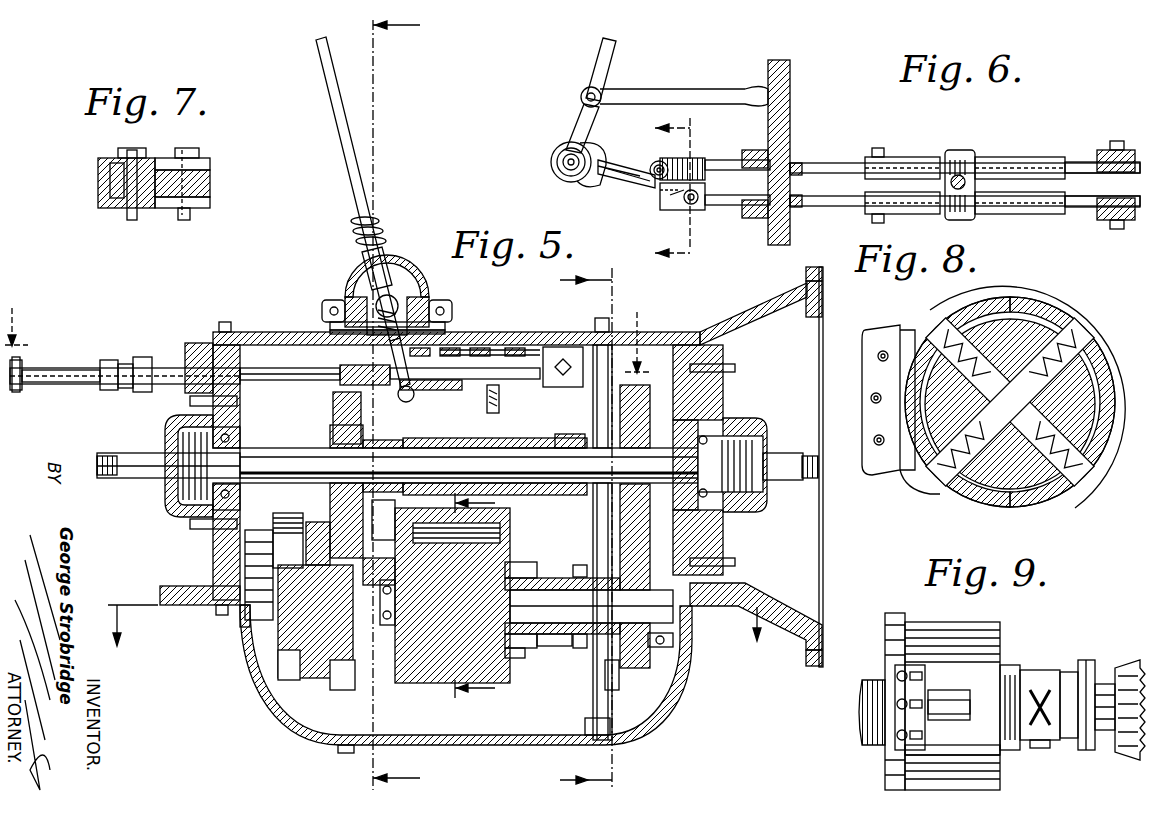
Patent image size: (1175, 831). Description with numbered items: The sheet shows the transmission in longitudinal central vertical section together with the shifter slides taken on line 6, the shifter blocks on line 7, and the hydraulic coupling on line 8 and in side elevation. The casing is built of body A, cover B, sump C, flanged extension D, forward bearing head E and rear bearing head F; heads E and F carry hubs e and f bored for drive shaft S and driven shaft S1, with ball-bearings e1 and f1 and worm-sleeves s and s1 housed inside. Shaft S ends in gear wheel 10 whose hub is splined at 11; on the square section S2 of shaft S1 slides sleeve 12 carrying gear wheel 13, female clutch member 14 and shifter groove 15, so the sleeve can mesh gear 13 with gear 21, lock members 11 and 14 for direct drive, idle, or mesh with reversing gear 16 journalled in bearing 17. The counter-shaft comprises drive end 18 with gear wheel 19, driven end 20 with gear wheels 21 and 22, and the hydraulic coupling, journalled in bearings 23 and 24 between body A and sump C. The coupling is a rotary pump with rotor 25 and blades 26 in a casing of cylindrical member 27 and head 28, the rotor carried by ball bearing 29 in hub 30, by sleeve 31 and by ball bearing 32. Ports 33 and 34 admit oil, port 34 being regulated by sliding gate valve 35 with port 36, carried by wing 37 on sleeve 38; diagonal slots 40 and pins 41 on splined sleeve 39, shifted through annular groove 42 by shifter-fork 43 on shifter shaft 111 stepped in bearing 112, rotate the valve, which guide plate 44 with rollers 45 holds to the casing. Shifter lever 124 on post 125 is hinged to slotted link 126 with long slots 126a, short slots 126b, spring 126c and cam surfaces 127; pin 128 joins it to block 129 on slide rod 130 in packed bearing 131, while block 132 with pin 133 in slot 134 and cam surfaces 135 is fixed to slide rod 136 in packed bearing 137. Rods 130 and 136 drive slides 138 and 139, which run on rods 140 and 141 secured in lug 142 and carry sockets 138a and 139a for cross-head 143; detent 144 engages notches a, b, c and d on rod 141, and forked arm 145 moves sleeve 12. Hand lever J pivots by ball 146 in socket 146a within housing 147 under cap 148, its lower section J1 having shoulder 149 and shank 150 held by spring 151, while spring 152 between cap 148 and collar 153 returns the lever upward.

In FIG. 5, the spline clutch male member 11 is at (582, 512).
In FIG. 5, the sleeve 12 is at (548, 529).
In FIG. 5, the section line 6— 6 is at (327, 328).
In FIG. 5, the section line 7— 7 is at (664, 192).
In FIG. 5, the section line 8— 8 is at (482, 597).
In FIG. 5, the gear wheel 10 is at (652, 378).
In FIG. 5, the gear wheel 13 is at (364, 430).
In FIG. 5, the female clutch member 14 is at (560, 436).
In FIG. 5, the shifter groove 15 is at (425, 438).
In FIG. 5, the reversing gear wheel 16 is at (290, 513).
In FIG. 5, the bearing 17 is at (258, 530).
In FIG. 5, the counter-shaft drive end 18 is at (318, 522).
In FIG. 5, the gear wheel 19 is at (650, 680).
In FIG. 9, the gear wheel 19 is at (1120, 670).
In FIG. 5, the counter-shaft driven end 20 is at (315, 640).
In FIG. 9, the counter-shaft driven end 20 is at (862, 718).
In FIG. 5, the gear wheel 21 is at (345, 680).
In FIG. 5, the gear wheel 22 is at (292, 660).
In FIG. 5, the bearing 23 is at (674, 640).
In FIG. 5, the bearing 24 is at (245, 630).
In FIG. 5, the rotor 25 is at (500, 545).
In FIG. 8, the rotor 25 is at (1015, 488).
In FIG. 8, the blades 26 is at (1070, 332).
In FIG. 5, the cylindrical member 27 is at (505, 528).
In FIG. 8, the cylindrical member 27 is at (1098, 342).
In FIG. 9, the cylindrical member 27 is at (990, 622).
In FIG. 5, the head 28 is at (390, 540).
In FIG. 9, the head 28 is at (888, 642).
In FIG. 5, the ball bearing 29 is at (545, 576).
In FIG. 5, the hub 30 is at (515, 658).
In FIG. 9, the hub 30 is at (1028, 670).
In FIG. 5, the sleeve 31 is at (545, 648).
In FIG. 5, the ball bearing 32 is at (388, 628).
In FIG. 8, the port hole 33 is at (1124, 395).
In FIG. 8, the port hole 34 is at (898, 412).
In FIG. 9, the port hole 34 is at (952, 700).
In FIG. 8, the sliding gate valve 35 is at (900, 476).
In FIG. 9, the sliding gate valve 35 is at (990, 752).
In FIG. 8, the port 36 is at (880, 385).
In FIG. 9, the port 36 is at (960, 720).
In FIG. 9, the wing 37 is at (1010, 665).
In FIG. 5, the sleeve 38 is at (548, 648).
In FIG. 9, the sleeve 38 is at (1090, 740).
In FIG. 5, the sleeve 39 is at (572, 576).
In FIG. 9, the diagonal slots 40 is at (1042, 690).
In FIG. 9, the pins 41 is at (1042, 748).
In FIG. 9, the annular groove 42 is at (1072, 690).
In FIG. 5, the shifter-fork 43 is at (578, 648).
In FIG. 9, the shifter-fork 43 is at (1086, 660).
In FIG. 9, the guide plate 44 is at (898, 745).
In FIG. 8, the rollers 45 is at (878, 356).
In FIG. 9, the rollers 45 is at (898, 690).
In FIG. 5, the shifter shaft 111 is at (593, 398).
In FIG. 5, the bearing 112 is at (612, 735).
In FIG. 5, the shifter lever 124 is at (612, 52).
In FIG. 5, the post 125 is at (680, 88).
In FIG. 7, the link 126 is at (206, 162).
In FIG. 5, the link 126 is at (583, 178).
In FIG. 5, the long slots 126a is at (576, 143).
In FIG. 5, the short slots 126b is at (676, 150).
In FIG. 5, the spring 126c is at (25, 364).
In FIG. 5, the cam surfaces 127 is at (640, 190).
In FIG. 7, the pin 128 is at (190, 218).
In FIG. 5, the pin 128 is at (646, 162).
In FIG. 7, the block 129 is at (208, 184).
In FIG. 5, the block 129 is at (695, 158).
In FIG. 6, the slide rod 130 is at (830, 162).
In FIG. 6, the packed bearing 131 is at (795, 160).
In FIG. 7, the block 132 is at (98, 186).
In FIG. 5, the block 132 is at (698, 210).
In FIG. 7, the pin 133 is at (128, 216).
In FIG. 5, the pin 133 is at (692, 205).
In FIG. 5, the slot 134 is at (680, 200).
In FIG. 5, the cam surfaces 135 is at (662, 195).
In FIG. 5, the slide rod 136 is at (272, 380).
In FIG. 6, the slide rod 136 is at (836, 208).
In FIG. 5, the packed bearing 137 is at (195, 343).
In FIG. 6, the packed bearing 137 is at (800, 180).
In FIG. 6, the slide 138 is at (905, 157).
In FIG. 6, the socket 138a is at (978, 157).
In FIG. 5, the slide 139 is at (350, 385).
In FIG. 6, the slide 139 is at (930, 200).
In FIG. 6, the socket 139a is at (985, 220).
In FIG. 6, the rod 140 is at (1070, 162).
In FIG. 6, the rod 141 is at (1072, 210).
In FIG. 5, the lug 142 is at (553, 347).
In FIG. 6, the lug 142 is at (1097, 186).
In FIG. 5, the cross-head 143 is at (361, 410).
In FIG. 6, the cross-head 143 is at (975, 185).
In FIG. 5, the spring pressed detent 144 is at (500, 395).
In FIG. 5, the forked arm 145 is at (420, 392).
In FIG. 5, the ball 146 is at (350, 290).
In FIG. 5, the socket 146a is at (340, 302).
In FIG. 5, the housing 147 is at (425, 275).
In FIG. 5, the spring pressed cap 148 is at (362, 256).
In FIG. 5, the cylindrical shoulder 149 is at (432, 295).
In FIG. 5, the shank 150 is at (392, 298).
In FIG. 5, the coiled spring 151 is at (398, 300).
In FIG. 5, the coiled spring 152 is at (354, 232).
In FIG. 5, the fixed collar 153 is at (352, 218).
In FIG. 5, the body A is at (213, 560).
In FIG. 6, the body A is at (790, 76).
In FIG. 5, the cover B is at (660, 332).
In FIG. 5, the bottom or sump C is at (290, 712).
In FIG. 5, the flanged extension D is at (825, 538).
In FIG. 5, the forward bearing head E is at (725, 390).
In FIG. 5, the rear bearing head F is at (213, 540).
In FIG. 5, the hand gear shift lever J is at (335, 100).
In FIG. 5, the lower lever section J1 is at (345, 326).
In FIG. 5, the drive shaft S is at (780, 458).
In FIG. 5, the driven shaft S1 is at (145, 470).
In FIG. 5, the square shaft section S2 is at (310, 448).
In FIG. 5, the notch a is at (482, 348).
In FIG. 5, the notch b is at (515, 348).
In FIG. 5, the notch c is at (455, 348).
In FIG. 5, the notch d is at (425, 348).
In FIG. 5, the hub e is at (760, 420).
In FIG. 5, the ball-bearing e1 is at (735, 510).
In FIG. 5, the hub f is at (168, 428).
In FIG. 5, the ball-bearing f1 is at (238, 448).
In FIG. 5, the worm-sleeve s is at (760, 495).
In FIG. 5, the worm-sleeve s1 is at (190, 500).